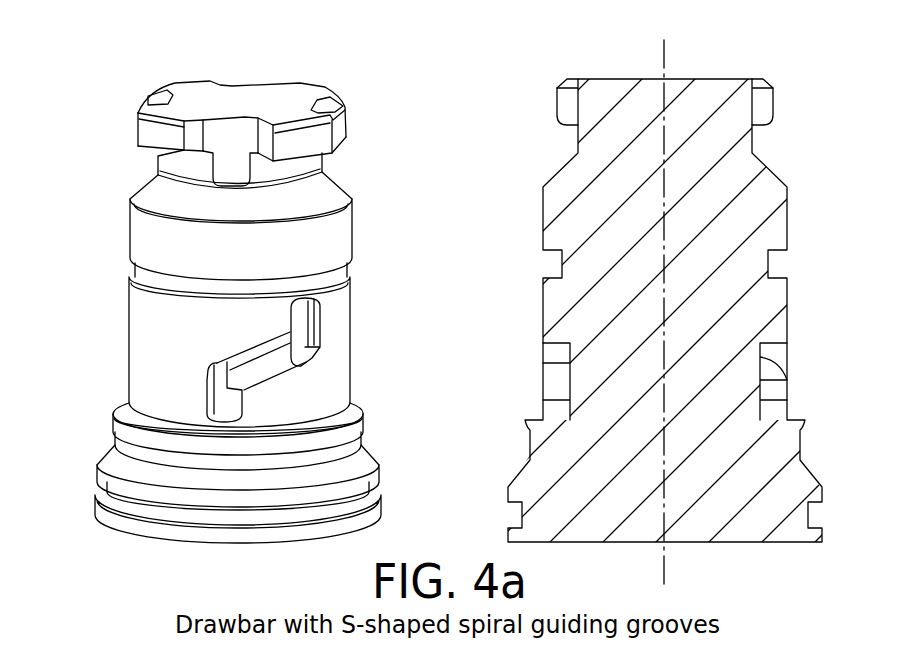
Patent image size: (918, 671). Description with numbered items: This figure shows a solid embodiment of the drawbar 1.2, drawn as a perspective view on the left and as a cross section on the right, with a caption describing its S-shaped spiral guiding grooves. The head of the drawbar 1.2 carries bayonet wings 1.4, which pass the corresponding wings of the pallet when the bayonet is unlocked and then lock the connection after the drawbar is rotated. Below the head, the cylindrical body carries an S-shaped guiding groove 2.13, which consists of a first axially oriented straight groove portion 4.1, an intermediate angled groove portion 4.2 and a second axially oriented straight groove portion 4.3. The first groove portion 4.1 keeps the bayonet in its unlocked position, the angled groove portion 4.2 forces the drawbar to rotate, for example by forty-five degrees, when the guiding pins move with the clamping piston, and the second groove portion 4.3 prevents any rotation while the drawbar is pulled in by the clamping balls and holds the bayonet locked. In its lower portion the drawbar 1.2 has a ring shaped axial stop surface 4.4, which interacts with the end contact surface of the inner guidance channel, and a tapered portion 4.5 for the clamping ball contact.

The drawbar 1.2 is at (280, 60).
The bayonet wings 1.4 is at (160, 135).
The S-shaped guiding groove 2.13 is at (349, 327).
The first axially oriented straight groove portion 4.1 is at (308, 325).
The intermediate angled groove portion 4.2 is at (263, 358).
The second axially oriented straight groove portion 4.3 is at (228, 398).
The ring shaped axial stop surface 4.4 is at (375, 380).
The tapered portion 4.5 is at (393, 433).